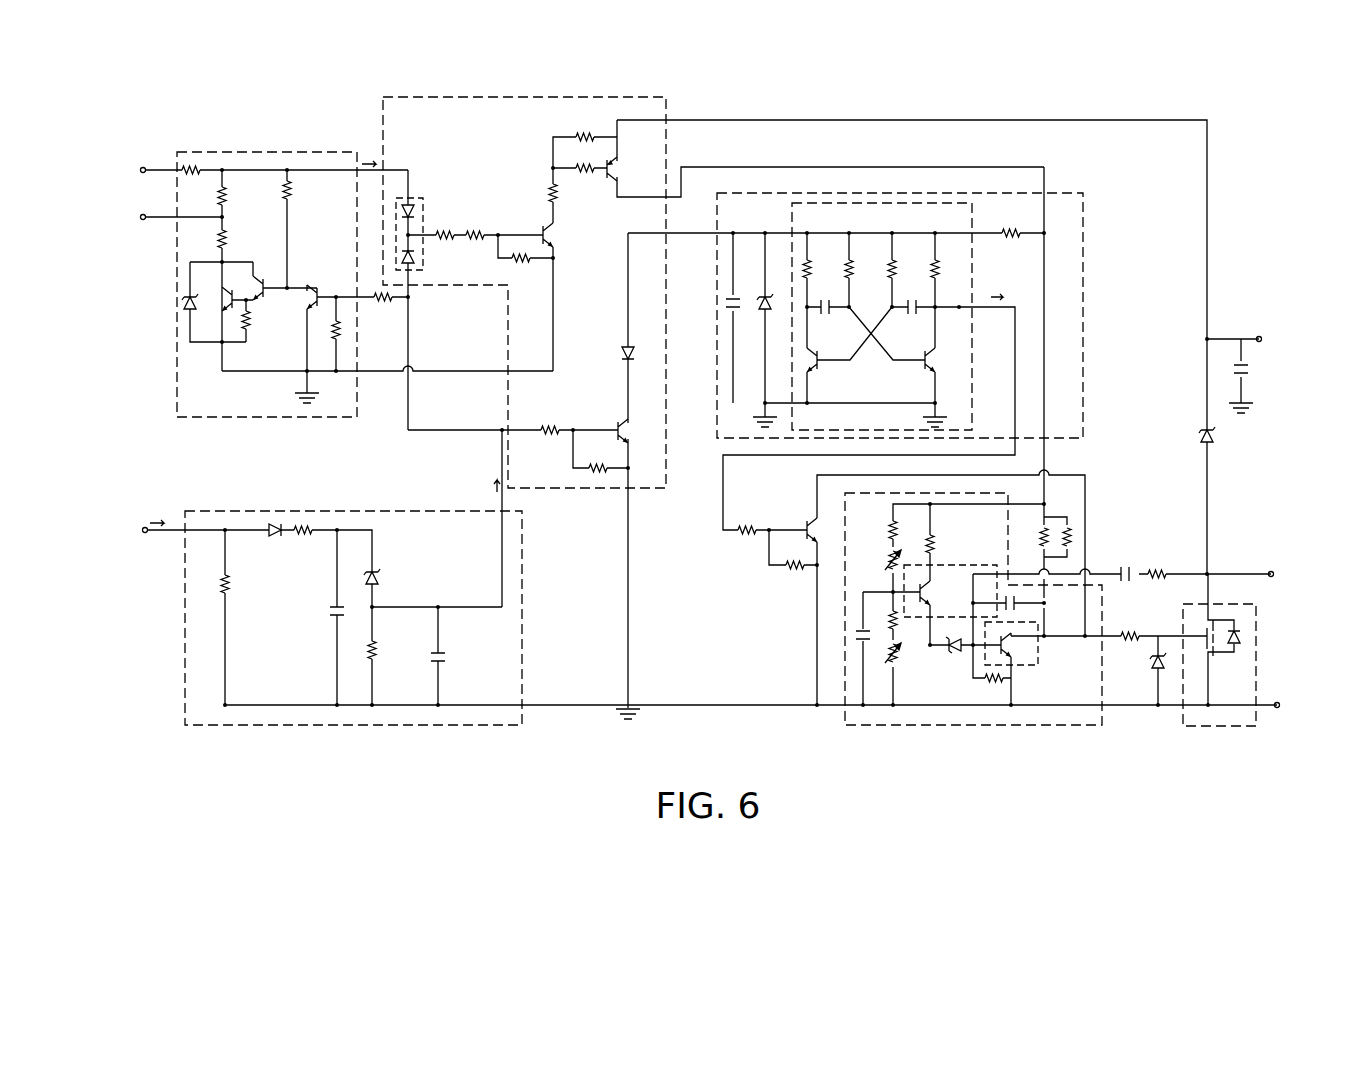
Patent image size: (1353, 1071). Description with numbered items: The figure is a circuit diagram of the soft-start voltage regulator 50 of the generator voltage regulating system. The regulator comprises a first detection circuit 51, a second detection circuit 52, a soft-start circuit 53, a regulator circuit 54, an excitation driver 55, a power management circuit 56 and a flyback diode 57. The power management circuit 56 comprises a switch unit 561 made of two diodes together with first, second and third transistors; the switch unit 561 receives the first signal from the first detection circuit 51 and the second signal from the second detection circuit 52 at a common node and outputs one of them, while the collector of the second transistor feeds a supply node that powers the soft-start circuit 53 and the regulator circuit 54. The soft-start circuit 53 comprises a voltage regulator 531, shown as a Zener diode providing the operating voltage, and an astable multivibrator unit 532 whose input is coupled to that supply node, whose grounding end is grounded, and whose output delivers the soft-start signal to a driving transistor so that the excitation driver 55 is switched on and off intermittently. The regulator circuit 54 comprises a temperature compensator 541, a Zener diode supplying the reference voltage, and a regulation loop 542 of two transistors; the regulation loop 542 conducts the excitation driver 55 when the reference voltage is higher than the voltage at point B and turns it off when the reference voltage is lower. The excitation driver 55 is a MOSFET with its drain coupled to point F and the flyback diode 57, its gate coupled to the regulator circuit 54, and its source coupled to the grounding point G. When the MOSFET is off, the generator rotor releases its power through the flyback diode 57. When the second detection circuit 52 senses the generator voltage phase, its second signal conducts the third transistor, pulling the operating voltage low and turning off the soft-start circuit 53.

The soft-start voltage regulator 50 is at (1082, 115).
The first detection circuit 51 is at (302, 152).
The second detection circuit 52 is at (282, 727).
The soft-start circuit 53 is at (980, 190).
The voltage regulator 531 is at (769, 298).
The astable multivibrator unit 532 is at (893, 203).
The regulator circuit 54 is at (1053, 725).
The temperature compensator 541 is at (955, 658).
The regulation loop 542 is at (907, 617).
The excitation driver 55 is at (1208, 726).
The power management circuit 56 is at (467, 97).
The switch unit 561 is at (421, 198).
The flyback diode 57 is at (1217, 437).